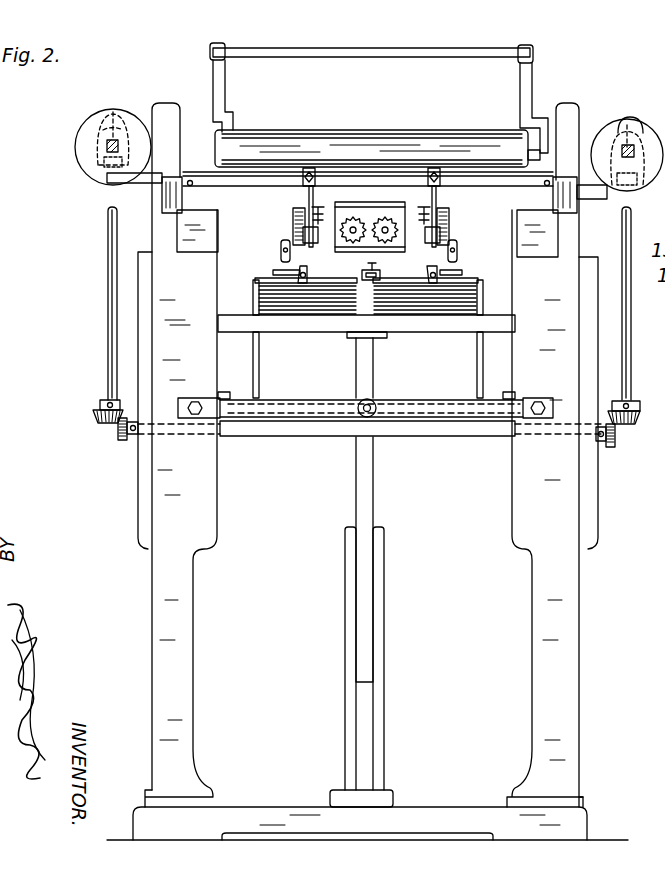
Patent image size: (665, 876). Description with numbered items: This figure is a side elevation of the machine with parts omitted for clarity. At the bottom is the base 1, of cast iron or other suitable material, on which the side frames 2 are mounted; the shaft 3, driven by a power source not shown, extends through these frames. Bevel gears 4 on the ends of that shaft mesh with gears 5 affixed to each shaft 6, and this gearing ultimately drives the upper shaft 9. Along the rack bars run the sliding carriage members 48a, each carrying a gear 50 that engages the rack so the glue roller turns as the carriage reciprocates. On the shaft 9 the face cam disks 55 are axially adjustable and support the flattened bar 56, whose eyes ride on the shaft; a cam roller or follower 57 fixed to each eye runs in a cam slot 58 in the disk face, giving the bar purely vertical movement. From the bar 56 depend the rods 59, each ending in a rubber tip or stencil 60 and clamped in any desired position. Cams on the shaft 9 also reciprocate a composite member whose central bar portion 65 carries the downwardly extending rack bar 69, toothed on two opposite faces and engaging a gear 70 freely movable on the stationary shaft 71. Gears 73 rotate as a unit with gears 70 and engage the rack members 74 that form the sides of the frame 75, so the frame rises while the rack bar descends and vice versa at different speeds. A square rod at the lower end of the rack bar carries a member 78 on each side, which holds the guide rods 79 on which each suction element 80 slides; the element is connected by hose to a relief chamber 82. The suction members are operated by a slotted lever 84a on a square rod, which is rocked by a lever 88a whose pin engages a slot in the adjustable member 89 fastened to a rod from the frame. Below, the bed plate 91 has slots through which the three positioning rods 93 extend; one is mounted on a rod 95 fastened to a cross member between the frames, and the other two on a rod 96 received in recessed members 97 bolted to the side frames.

The base 1 is at (452, 808).
The side frames 2 is at (152, 636).
The shaft 3 is at (268, 438).
The miter or bevel gears 4 is at (115, 437).
The gears 5 is at (95, 415).
The shaft 6 is at (107, 300).
The shaft 9 is at (113, 135).
The sliding carriage member 48a is at (297, 215).
The gear 50 is at (297, 228).
The face cam disks 55 is at (133, 118).
The flattened bar 56 is at (245, 178).
The cam roller or follower 57 is at (103, 162).
The cam slot 58 is at (92, 138).
The rods 59 is at (309, 197).
The tip or stencil 60 is at (318, 235).
The central bar portion 65 is at (360, 210).
The rack bar 69 is at (418, 207).
The gear 70 is at (350, 227).
The stationary shaft 71 is at (352, 245).
The gears 73 is at (390, 215).
The rack members 74 is at (313, 215).
The frame 75 is at (345, 215).
The member 78 is at (382, 268).
The guide rods 79 is at (308, 285).
The suction element 80 is at (322, 290).
The relief chamber 82 is at (168, 210).
The lever 84a is at (273, 272).
The lever 88a is at (285, 258).
The adjustable member 89 is at (285, 242).
The bed plate 91 is at (450, 330).
The positioning rods 93 is at (254, 355).
The rod 95 is at (378, 415).
The rod 96 is at (278, 405).
The recessed members 97 is at (236, 374).